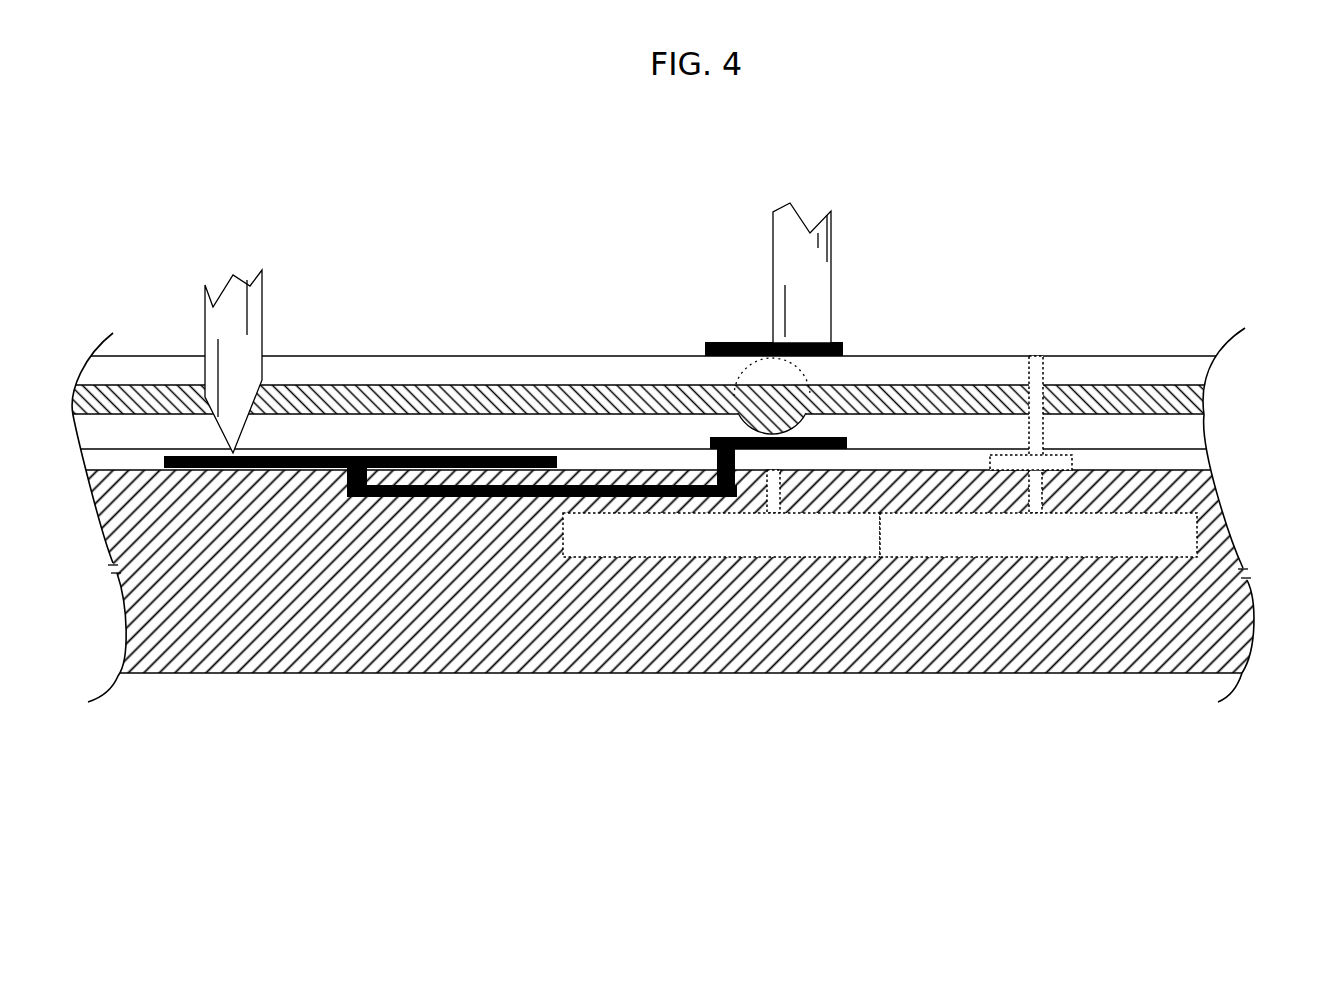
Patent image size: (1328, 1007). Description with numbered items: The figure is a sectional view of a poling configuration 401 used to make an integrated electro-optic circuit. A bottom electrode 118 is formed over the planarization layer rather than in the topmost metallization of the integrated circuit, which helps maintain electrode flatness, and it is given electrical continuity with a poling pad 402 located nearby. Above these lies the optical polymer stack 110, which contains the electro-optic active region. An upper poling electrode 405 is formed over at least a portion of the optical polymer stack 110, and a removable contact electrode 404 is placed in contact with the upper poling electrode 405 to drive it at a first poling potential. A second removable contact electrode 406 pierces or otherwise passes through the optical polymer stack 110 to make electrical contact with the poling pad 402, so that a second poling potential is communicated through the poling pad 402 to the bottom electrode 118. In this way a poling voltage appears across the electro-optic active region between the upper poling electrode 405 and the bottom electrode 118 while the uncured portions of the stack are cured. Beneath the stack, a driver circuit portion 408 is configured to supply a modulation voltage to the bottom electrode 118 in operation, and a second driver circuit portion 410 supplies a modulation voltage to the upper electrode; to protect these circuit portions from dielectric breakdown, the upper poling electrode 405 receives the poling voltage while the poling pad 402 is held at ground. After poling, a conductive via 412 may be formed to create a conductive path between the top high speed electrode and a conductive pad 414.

The poling configuration 401 is at (1030, 162).
The optical polymer stack 110 is at (682, 402).
The conductive pad 414 is at (1045, 392).
The bottom electrode 118 is at (705, 436).
The poling pad 402 is at (227, 470).
The contact electrode 404 is at (831, 280).
The upper poling electrode 405 is at (727, 343).
The second removable contact electrode 406 is at (262, 308).
The driver circuit portion 408 is at (742, 546).
The second driver circuit portion 410 is at (1055, 544).
The conductive via 412 is at (1030, 355).